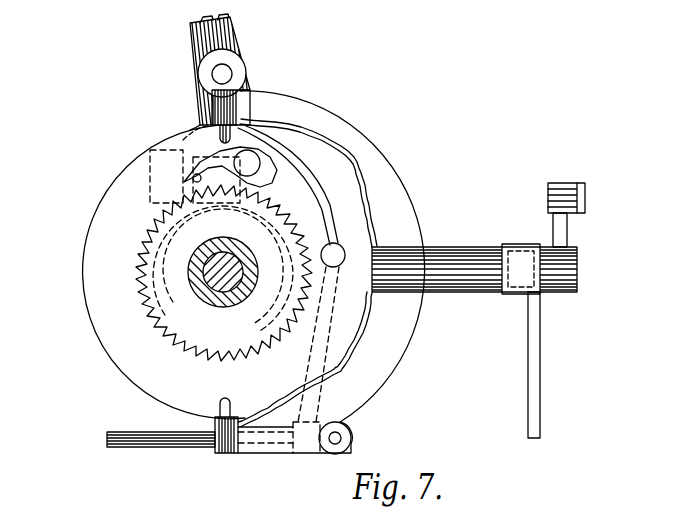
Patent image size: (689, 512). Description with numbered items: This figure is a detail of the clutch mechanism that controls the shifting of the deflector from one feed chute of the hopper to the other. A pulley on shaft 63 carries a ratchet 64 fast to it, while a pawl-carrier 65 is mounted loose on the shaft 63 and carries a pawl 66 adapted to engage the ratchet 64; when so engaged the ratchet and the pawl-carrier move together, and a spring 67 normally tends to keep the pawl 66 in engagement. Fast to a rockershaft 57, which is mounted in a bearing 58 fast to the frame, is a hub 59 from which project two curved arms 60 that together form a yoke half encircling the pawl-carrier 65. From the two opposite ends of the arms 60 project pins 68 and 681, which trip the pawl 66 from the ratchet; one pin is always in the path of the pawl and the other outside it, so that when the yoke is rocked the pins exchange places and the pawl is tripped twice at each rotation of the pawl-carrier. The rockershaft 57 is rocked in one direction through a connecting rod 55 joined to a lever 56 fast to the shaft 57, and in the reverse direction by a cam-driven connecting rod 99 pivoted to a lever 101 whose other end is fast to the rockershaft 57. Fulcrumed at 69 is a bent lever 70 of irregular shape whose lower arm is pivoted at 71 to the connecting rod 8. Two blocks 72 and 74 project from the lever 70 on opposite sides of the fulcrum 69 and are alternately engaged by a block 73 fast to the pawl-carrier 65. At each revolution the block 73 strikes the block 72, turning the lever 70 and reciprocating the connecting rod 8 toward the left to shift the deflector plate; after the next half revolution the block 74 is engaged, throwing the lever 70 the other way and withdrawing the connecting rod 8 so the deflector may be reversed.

The connecting rod 8 is at (130, 441).
The connecting rod 55 is at (540, 365).
The lever 56 is at (513, 247).
The rockershaft 57 is at (467, 281).
The bearing 58 is at (483, 292).
The hub 59 is at (400, 253).
The curved arms 60 is at (360, 153).
The shaft 63 is at (206, 270).
The ratchet 64 is at (173, 333).
The pawl-carrier 65 is at (107, 232).
The pawl 66 is at (273, 170).
The spring 67 is at (318, 208).
The pin 68 is at (212, 130).
The fulcrum 69 is at (226, 75).
The bent lever 70 is at (243, 44).
The pivot 71 is at (348, 441).
The block 72 is at (144, 156).
The block 73 is at (205, 212).
The block 74 is at (316, 364).
The connecting rod 99 is at (585, 191).
The lever 101 is at (562, 229).
The pin 681 is at (221, 400).